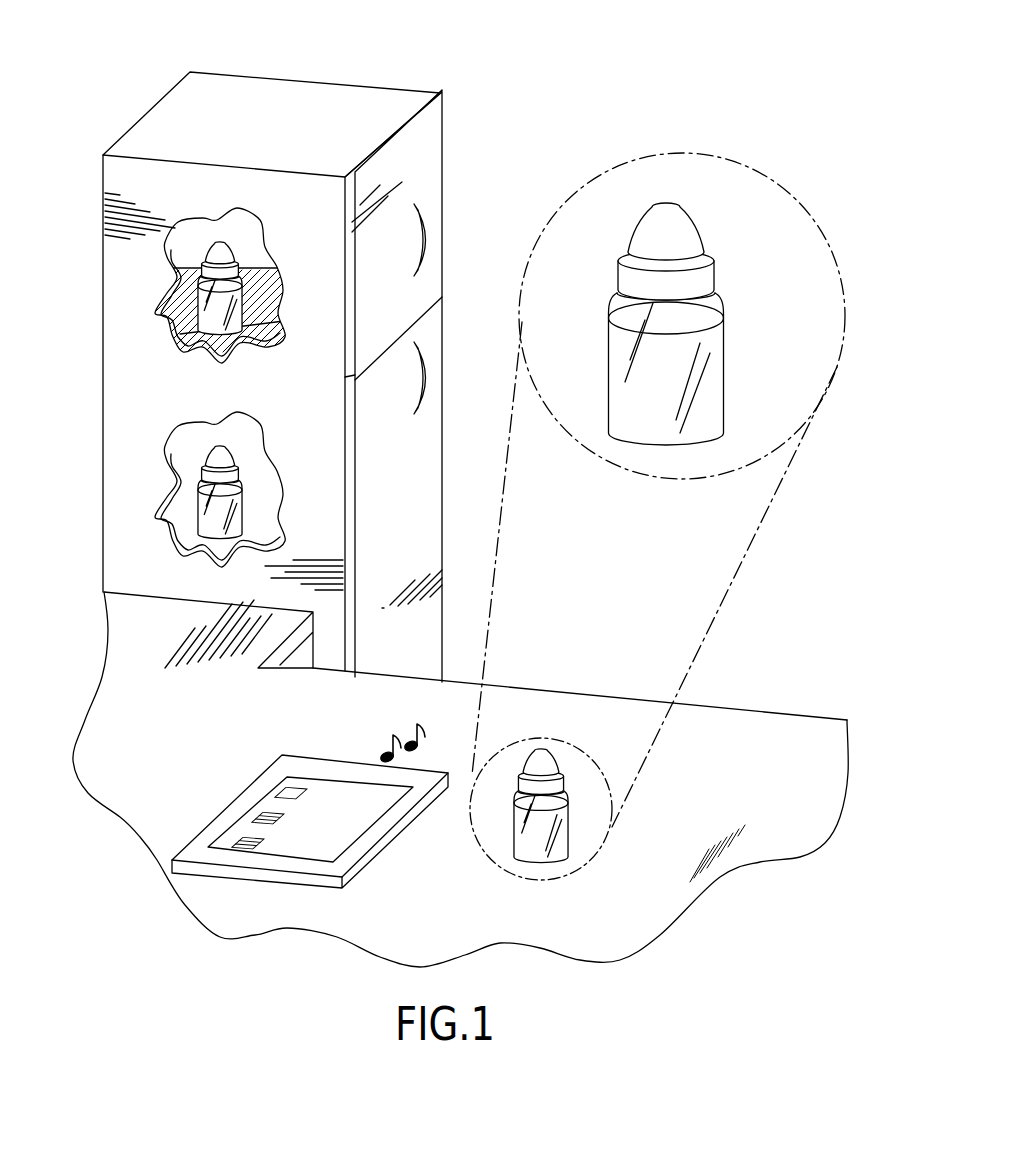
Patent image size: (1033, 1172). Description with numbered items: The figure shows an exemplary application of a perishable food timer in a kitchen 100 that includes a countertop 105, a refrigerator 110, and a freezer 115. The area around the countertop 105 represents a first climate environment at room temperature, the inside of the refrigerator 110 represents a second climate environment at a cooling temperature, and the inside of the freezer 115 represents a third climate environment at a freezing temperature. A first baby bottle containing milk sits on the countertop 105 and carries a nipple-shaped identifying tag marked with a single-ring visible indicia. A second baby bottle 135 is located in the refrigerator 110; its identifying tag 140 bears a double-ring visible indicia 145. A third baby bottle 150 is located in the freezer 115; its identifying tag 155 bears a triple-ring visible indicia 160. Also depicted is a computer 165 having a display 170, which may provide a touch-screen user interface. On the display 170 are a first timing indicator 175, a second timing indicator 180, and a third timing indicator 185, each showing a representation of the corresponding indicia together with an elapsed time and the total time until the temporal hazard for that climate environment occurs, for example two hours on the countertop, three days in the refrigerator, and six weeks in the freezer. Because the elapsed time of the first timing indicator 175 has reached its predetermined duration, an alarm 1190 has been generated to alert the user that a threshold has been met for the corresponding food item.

The kitchen 100 is at (632, 94).
The countertop 105 is at (770, 730).
The refrigerator 110 is at (243, 377).
The freezer 115 is at (117, 248).
The second baby bottle 135 is at (247, 519).
The identifying tag 140 is at (237, 469).
The visible indicia 145 is at (230, 459).
The third baby bottle 150 is at (247, 315).
The identifying tag 155 is at (237, 265).
The visible indicia 160 is at (230, 255).
The computer 165 is at (290, 820).
The display 170 is at (330, 780).
The first timing indicator 175 is at (268, 779).
The second timing indicator 180 is at (248, 806).
The third timing indicator 185 is at (223, 828).
The alarm 1190 is at (440, 733).